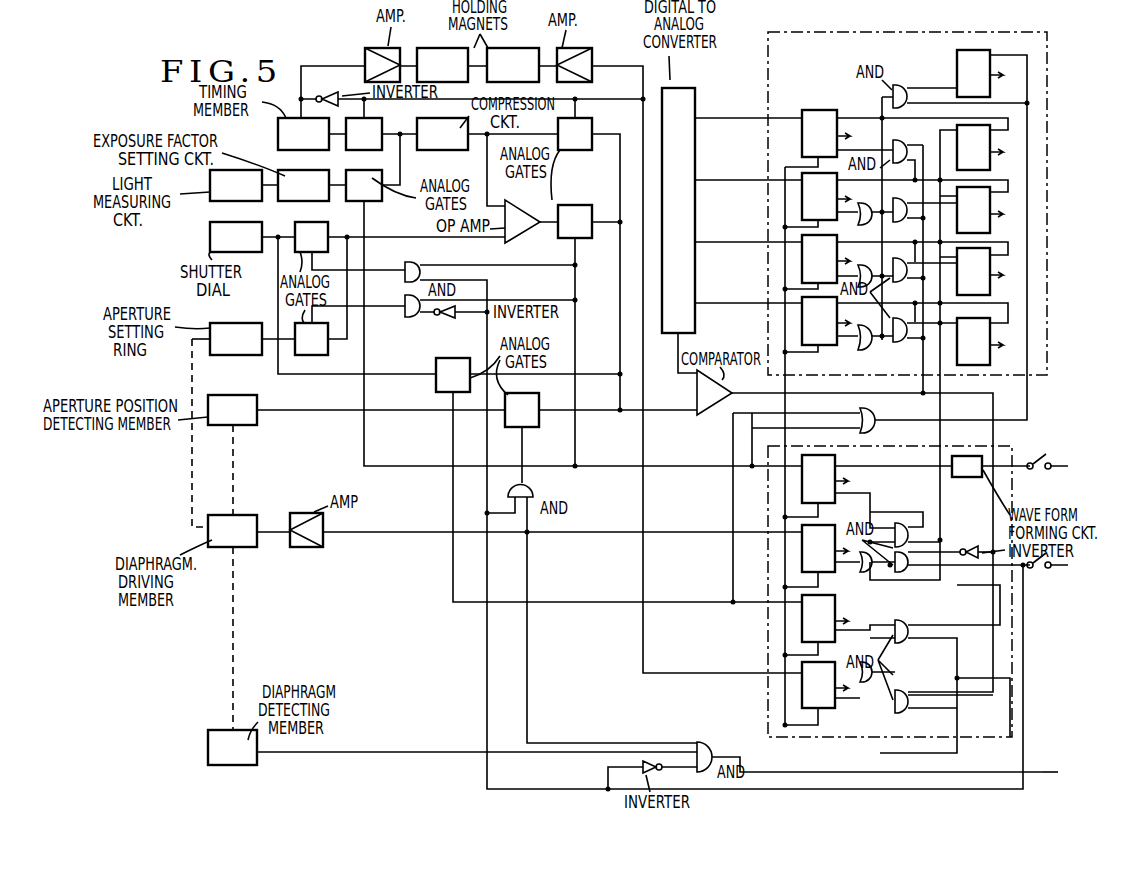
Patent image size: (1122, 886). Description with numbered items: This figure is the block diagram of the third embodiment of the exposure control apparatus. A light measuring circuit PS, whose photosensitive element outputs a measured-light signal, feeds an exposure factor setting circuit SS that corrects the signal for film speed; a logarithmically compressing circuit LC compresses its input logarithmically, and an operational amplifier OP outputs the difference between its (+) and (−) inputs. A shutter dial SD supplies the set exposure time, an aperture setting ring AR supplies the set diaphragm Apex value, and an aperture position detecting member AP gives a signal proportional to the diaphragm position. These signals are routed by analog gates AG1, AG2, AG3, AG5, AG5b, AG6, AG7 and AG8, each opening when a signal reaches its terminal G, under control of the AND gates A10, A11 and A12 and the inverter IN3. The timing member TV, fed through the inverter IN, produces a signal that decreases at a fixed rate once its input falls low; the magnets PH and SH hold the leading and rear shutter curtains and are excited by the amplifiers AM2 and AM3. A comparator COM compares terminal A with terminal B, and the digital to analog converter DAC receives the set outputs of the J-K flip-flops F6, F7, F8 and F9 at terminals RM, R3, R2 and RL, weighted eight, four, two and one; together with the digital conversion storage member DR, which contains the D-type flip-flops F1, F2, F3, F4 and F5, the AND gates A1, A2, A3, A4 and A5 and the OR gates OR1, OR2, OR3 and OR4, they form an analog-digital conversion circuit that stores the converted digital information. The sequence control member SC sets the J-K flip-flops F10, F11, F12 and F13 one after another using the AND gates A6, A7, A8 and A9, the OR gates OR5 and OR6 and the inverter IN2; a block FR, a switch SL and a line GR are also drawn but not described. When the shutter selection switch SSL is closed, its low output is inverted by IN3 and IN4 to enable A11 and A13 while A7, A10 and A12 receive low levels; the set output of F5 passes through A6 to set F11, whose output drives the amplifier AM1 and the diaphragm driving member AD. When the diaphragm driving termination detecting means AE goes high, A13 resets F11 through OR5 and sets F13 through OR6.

The amplifier AM2 is at (365, 64).
The magnet PH is at (442, 65).
The magnet SH is at (513, 65).
The amplifier AM3 is at (594, 66).
The inverter IN is at (324, 87).
The timing member TV is at (278, 134).
The analog gate AG2 is at (372, 150).
The logarithmically compressing circuit LC is at (442, 134).
The analog gate AG5 is at (572, 150).
The light measuring circuit PS is at (236, 186).
The exposure factor setting circuit SS is at (303, 186).
The analog gate AG1 is at (382, 200).
The operational amplifier OP is at (526, 210).
The analog gate AG6 is at (548, 190).
The shutter dial SD is at (236, 237).
The analog gate AG3 is at (311, 237).
The aperture setting ring AR is at (236, 339).
The analog gate AG5b is at (311, 339).
The AND gate A10 is at (420, 264).
The AND gate A11 is at (405, 316).
The inverter IN3 is at (446, 318).
The analog gate AG7 is at (436, 380).
The analog gate AG8 is at (539, 395).
The aperture position detecting member AP is at (232, 410).
The AND gate A12 is at (533, 491).
The diaphragm driving member AD is at (232, 531).
The amplifier AM1 is at (310, 548).
The diaphragm driving termination detecting means AE is at (232, 747).
The AND gate A13 is at (700, 744).
The inverter IN4 is at (655, 770).
The digital to analog converter DAC is at (678, 92).
The D-A converter input terminal RM is at (736, 119).
The D-A converter input terminal R3 is at (737, 181).
The D-A converter input terminal R2 is at (737, 243).
The D-A converter input terminal RL is at (738, 304).
The comparator COM is at (705, 413).
The digital conversion storage member DR is at (1032, 376).
The J-K type flip-flop F6 is at (802, 140).
The J-K type flip-flop F7 is at (802, 202).
The J-K type flip-flop F8 is at (802, 264).
The J-K type flip-flop F9 is at (802, 326).
The D-type flip-flop F1 is at (990, 86).
The D-type flip-flop F2 is at (990, 159).
The D-type flip-flop F3 is at (990, 222).
The D-type flip-flop F4 is at (990, 284).
The D-type flip-flop F5 is at (990, 354).
The AND gate A1 is at (904, 88).
The AND gate A2 is at (904, 143).
The AND gate A3 is at (895, 224).
The AND gate A4 is at (895, 284).
The AND gate A5 is at (895, 344).
The OR gate OR1 is at (870, 201).
The OR gate OR2 is at (870, 263).
The OR gate OR3 is at (870, 325).
The OR gate OR4 is at (877, 410).
The sequence control member SC is at (978, 740).
The J-K type flip-flop F10 is at (802, 483).
The J-K type flip-flop F11 is at (802, 555).
The J-K type flip-flop F12 is at (802, 625).
The J-K type flip-flop F13 is at (802, 692).
The wave form forming circuit FR is at (960, 478).
The switch SL is at (1047, 479).
The shutter selection switch SSL is at (1047, 576).
The inverter IN2 is at (965, 548).
The AND gate A6 is at (900, 524).
The AND gate A7 is at (900, 574).
The AND gate A8 is at (908, 626).
The AND gate A9 is at (908, 705).
The OR gate OR5 is at (863, 575).
The OR gate OR6 is at (910, 676).
The ground/output terminal GR is at (1054, 774).